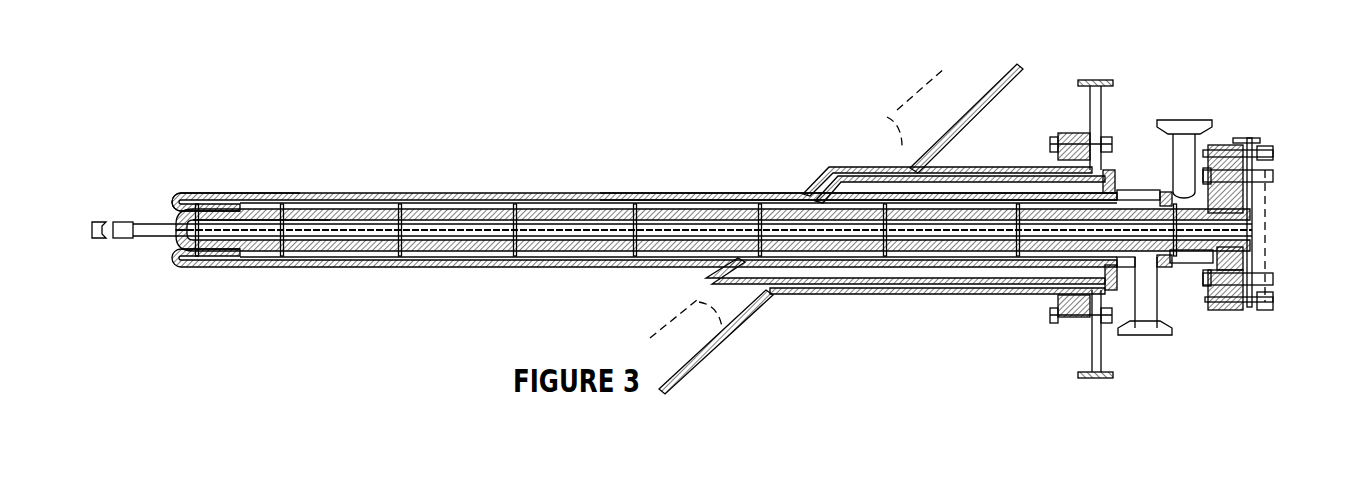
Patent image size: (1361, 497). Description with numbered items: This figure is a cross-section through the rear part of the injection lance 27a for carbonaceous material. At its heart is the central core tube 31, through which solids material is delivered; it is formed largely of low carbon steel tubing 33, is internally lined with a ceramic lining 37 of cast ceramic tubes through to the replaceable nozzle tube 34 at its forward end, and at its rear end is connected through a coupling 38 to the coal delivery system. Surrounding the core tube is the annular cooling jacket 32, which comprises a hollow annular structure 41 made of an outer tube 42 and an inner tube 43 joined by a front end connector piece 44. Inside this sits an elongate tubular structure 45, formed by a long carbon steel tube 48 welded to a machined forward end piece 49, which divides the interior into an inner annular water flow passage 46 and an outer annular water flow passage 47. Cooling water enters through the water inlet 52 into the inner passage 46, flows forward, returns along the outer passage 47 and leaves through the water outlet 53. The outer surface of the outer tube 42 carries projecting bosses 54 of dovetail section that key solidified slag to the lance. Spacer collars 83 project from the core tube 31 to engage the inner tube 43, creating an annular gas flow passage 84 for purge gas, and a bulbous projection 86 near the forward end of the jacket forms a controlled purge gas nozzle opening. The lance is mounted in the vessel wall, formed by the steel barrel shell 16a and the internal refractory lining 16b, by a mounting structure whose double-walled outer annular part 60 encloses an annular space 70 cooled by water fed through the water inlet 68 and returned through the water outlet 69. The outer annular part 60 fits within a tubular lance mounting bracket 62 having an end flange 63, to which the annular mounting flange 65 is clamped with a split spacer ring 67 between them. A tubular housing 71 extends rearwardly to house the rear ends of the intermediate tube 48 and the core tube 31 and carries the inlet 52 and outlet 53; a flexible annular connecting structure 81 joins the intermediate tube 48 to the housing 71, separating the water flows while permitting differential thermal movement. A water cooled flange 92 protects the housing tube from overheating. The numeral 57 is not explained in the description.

The steel barrel shell 16a is at (978, 142).
The internal refractory lining 16b is at (897, 110).
The injection lance 27a is at (374, 182).
The central core tube 31 is at (592, 224).
The annular cooling jacket 32 is at (692, 187).
The low carbon steel tubing 33 is at (308, 239).
The nozzle tube 34 is at (125, 242).
The ceramic lining 37 is at (370, 246).
The coupling 38 is at (1232, 257).
The hollow annular structure 41 is at (456, 184).
The outer tube 42 is at (520, 194).
The inner tube 43 is at (553, 211).
The front end connector piece 44 is at (170, 197).
The elongate tubular structure 45 is at (272, 200).
The inner elongate annular water flow passage 46 is at (768, 206).
The outer elongate annular water flow passage 47 is at (746, 195).
The carbon steel tube 48 is at (655, 194).
The forward end piece 49 is at (192, 204).
The water inlet 52 is at (1186, 130).
The water outlet 53 is at (1140, 332).
The projecting bosses 54 is at (493, 275).
The nose cap 57 is at (165, 210).
The outer annular part 60 is at (735, 342).
The lance mounting bracket 62 is at (976, 294).
The end flange 63 is at (1066, 325).
The annular mounting flange 65 is at (1103, 298).
The split spacer ring 67 is at (1080, 160).
The water inlet 68 is at (1100, 80).
The water outlet 69 is at (1097, 380).
The annular space 70 is at (913, 282).
The tubular housing 71 is at (1128, 190).
The flexible annular connecting structure 81 is at (1162, 263).
The spacer collars 83 is at (402, 246).
The annular gas flow passage 84 is at (311, 219).
The bulbous projection 86 is at (171, 250).
The water cooled flange 92 is at (1257, 170).